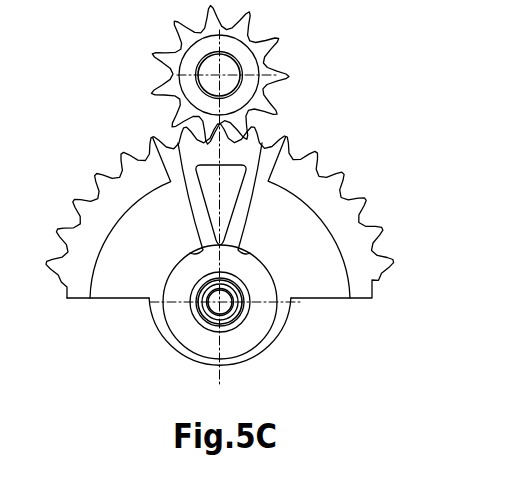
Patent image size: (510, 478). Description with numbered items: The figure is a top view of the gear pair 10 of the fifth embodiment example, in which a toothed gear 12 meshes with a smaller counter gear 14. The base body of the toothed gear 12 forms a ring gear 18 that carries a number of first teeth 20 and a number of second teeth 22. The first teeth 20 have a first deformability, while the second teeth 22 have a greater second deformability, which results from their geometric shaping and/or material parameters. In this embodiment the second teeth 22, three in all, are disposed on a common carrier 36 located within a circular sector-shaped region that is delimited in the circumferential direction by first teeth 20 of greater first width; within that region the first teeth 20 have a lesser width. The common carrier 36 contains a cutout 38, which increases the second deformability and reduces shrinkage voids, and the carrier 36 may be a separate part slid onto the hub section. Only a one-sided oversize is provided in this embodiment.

The gear pair 10 is at (100, 95).
The toothed gear 12 is at (251, 196).
The pinion gear 14 is at (268, 40).
The ring gear 18 is at (251, 186).
The first teeth 20 is at (374, 228).
The second teeth 22 is at (255, 145).
The common carrier 36 is at (240, 210).
The cutout 38 is at (212, 185).